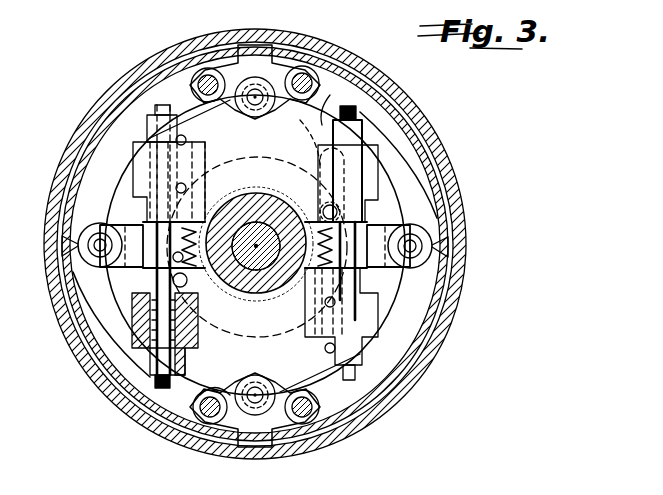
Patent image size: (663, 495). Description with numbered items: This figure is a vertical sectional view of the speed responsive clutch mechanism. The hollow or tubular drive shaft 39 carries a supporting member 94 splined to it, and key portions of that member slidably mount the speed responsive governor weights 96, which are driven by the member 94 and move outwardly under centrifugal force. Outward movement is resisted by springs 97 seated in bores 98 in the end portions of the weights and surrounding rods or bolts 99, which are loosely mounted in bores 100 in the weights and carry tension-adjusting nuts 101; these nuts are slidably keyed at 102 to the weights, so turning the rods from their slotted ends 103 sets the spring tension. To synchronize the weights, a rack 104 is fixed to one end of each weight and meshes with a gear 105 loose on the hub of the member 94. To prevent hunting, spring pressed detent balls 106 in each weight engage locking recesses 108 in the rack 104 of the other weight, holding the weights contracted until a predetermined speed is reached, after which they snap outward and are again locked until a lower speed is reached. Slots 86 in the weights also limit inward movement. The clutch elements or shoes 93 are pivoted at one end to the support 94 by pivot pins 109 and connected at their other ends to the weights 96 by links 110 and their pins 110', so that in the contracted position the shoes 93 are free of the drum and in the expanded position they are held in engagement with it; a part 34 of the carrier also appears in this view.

The planet gear carrier part 34 is at (268, 212).
The hollow or tubular drive shaft 39 is at (258, 236).
The slots 86 is at (438, 140).
The clutch elements 93 is at (402, 96).
The supporting member 94 is at (385, 205).
The governor weights 96 is at (326, 120).
The springs 97 is at (145, 310).
The bores 98 is at (155, 330).
The rods or bolts 99 is at (158, 262).
The bores 100 is at (140, 290).
The tension-adjusting nuts 101 is at (362, 128).
The keyed connection 102 is at (196, 340).
The slotted ends 103 is at (356, 112).
The rack 104 is at (165, 205).
The gear 105 is at (172, 224).
The balls 106 is at (200, 300).
The locking recesses 108 is at (172, 272).
The pivot pins 109 is at (78, 247).
The links 110 is at (255, 246).
The pins 110' is at (258, 246).